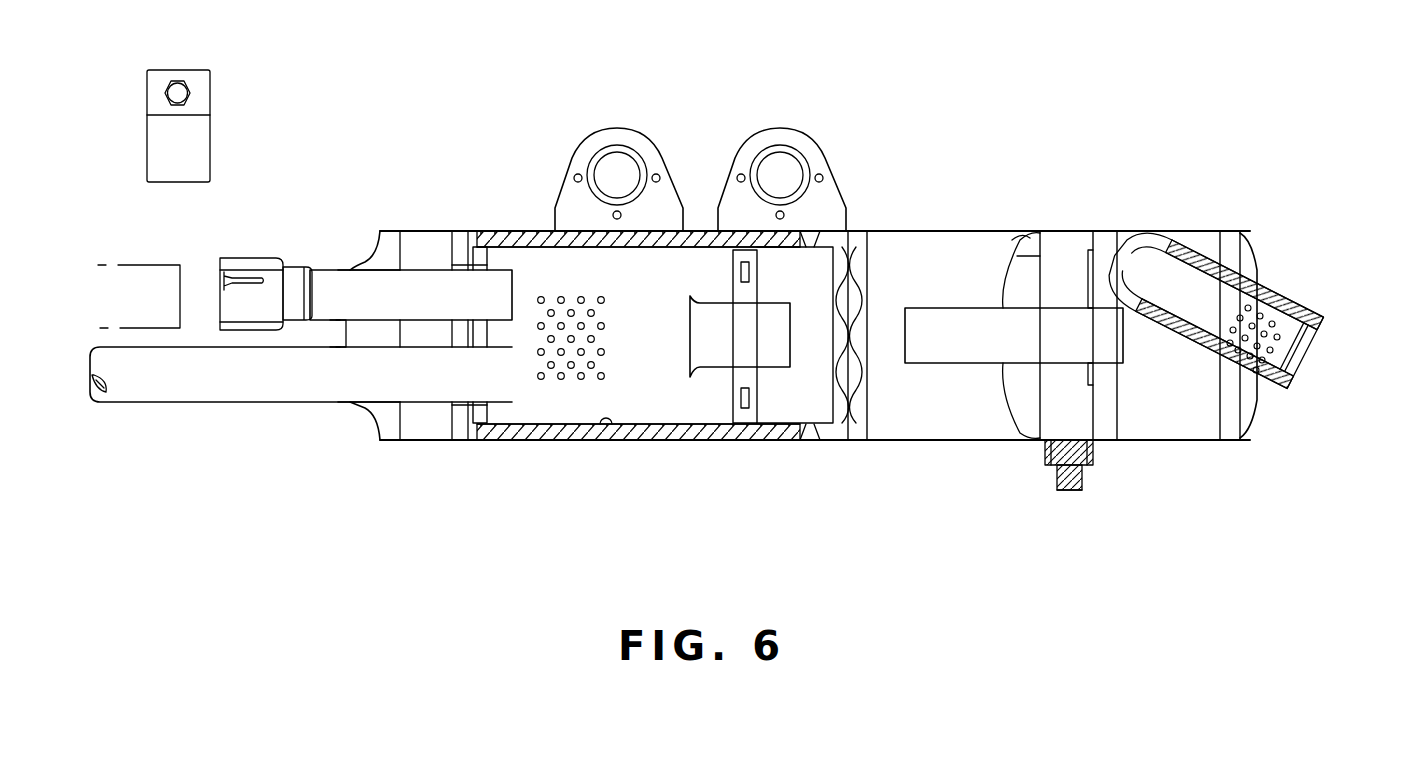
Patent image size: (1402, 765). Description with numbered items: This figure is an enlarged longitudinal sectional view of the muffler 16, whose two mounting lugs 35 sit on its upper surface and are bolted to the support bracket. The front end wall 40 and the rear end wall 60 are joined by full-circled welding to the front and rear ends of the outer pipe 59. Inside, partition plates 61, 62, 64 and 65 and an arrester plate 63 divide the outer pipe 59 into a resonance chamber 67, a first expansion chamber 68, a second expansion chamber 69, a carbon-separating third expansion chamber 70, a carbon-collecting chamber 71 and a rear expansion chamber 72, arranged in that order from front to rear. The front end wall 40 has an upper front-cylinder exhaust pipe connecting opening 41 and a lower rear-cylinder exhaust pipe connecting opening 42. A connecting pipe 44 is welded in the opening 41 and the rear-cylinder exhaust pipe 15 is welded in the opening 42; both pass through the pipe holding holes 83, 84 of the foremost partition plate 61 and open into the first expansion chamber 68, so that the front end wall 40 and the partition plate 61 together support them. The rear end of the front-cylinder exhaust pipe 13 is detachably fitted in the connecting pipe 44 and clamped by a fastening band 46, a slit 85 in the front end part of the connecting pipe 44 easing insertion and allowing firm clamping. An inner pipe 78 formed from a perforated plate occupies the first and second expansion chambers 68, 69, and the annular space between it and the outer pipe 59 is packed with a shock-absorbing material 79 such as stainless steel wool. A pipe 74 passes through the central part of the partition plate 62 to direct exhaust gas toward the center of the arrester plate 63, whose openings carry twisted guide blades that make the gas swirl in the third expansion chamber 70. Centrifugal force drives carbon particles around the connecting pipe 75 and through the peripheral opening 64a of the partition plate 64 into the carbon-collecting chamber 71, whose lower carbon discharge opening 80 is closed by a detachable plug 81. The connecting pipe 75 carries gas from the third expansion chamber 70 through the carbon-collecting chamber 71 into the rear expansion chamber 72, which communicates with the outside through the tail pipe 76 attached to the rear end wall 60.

The front-cylinder exhaust pipe 13 is at (138, 272).
The rear-cylinder exhaust pipe 15 is at (178, 392).
The muffler 16 is at (886, 176).
The mounting lugs 35 is at (615, 137).
The front end wall 40 is at (365, 430).
The front-cylinder exhaust pipe connecting opening 41 is at (343, 262).
The rear-cylinder exhaust pipe connecting opening 42 is at (335, 400).
The connecting pipe 44 is at (290, 265).
The fastening band 46 is at (160, 146).
The outer pipe 59 is at (918, 440).
The rear end wall 60 is at (1247, 242).
The partition plate 61 is at (500, 420).
The partition plate 62 is at (745, 410).
The arrester plate 63 is at (875, 412).
The partition plate 64 is at (1004, 418).
The opening 64a is at (1020, 232).
The partition plate 65 is at (1100, 400).
The resonance chamber 67 is at (413, 425).
The first expansion chamber 68 is at (655, 412).
The second expansion chamber 69 is at (783, 400).
The carbon-separating third expansion chamber 70 is at (950, 420).
The carbon-collecting chamber 71 is at (1067, 232).
The rear expansion chamber 72 is at (1208, 420).
The pipe 74 is at (700, 300).
The connecting pipe 75 is at (950, 315).
The tail pipe 76 is at (1295, 360).
The inner pipe 78 is at (605, 415).
The shock-absorbing material 79 is at (525, 245).
The carbon discharge opening 80 is at (1095, 455).
The detachable plug 81 is at (1069, 490).
The pipe holding hole 83 is at (455, 265).
The pipe holding hole 84 is at (490, 410).
The slit 85 is at (248, 280).